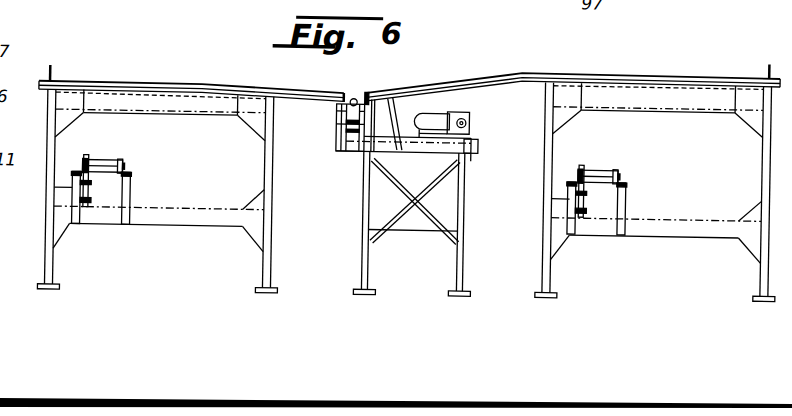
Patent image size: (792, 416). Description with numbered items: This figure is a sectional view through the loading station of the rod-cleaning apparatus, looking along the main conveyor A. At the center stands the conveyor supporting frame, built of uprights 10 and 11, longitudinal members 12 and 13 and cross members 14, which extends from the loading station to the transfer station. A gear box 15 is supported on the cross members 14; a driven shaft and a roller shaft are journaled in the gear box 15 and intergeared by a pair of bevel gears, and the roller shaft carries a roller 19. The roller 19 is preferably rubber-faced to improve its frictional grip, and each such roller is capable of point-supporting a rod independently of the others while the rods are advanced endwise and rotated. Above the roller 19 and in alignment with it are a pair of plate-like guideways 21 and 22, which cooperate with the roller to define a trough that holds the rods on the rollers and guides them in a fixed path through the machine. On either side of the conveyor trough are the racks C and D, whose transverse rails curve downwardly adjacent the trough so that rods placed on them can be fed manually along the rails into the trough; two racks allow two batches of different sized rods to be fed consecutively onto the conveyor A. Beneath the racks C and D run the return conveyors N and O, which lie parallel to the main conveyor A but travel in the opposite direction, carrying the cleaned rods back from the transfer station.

The upright 10 is at (458, 276).
The upright 11 is at (363, 274).
The longitudinal member 12 is at (403, 97).
The longitudinal member 13 is at (470, 144).
The cross member 14 is at (427, 152).
The gear box 15 is at (450, 112).
The roller 19 is at (341, 119).
The plate-like guideway 21 is at (348, 100).
The plate-like guideway 22 is at (362, 100).
The main conveyor A is at (354, 90).
The rack C is at (649, 66).
The rack D is at (124, 84).
The return conveyor N is at (106, 156).
The return conveyor O is at (606, 149).